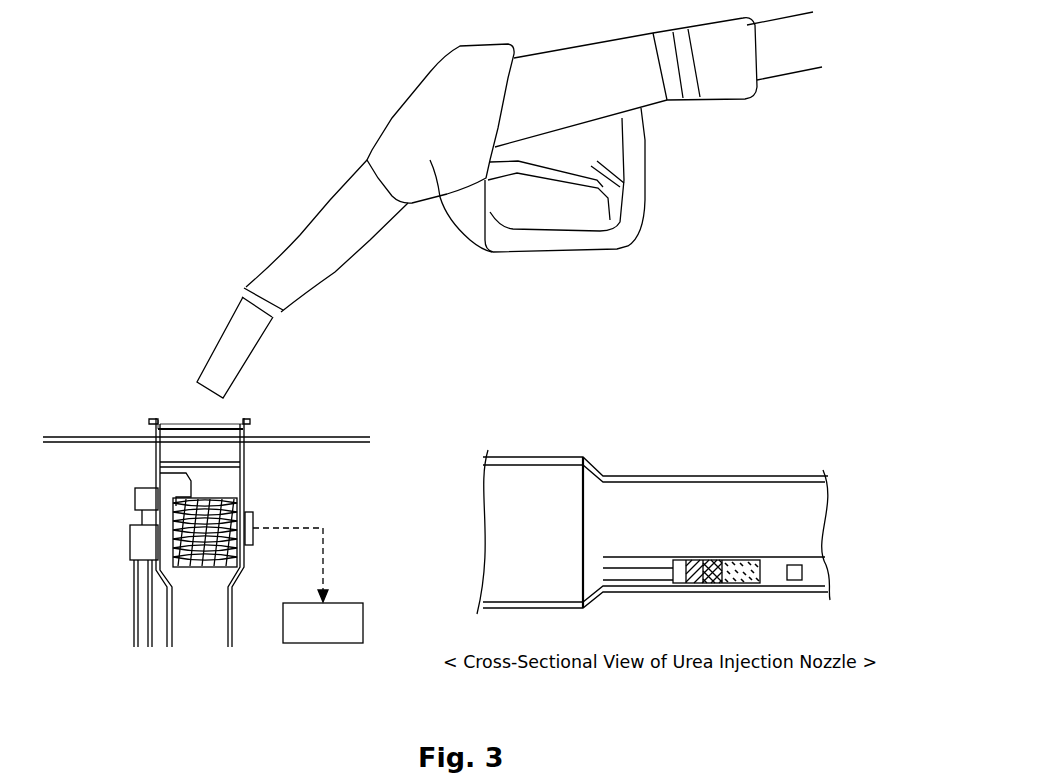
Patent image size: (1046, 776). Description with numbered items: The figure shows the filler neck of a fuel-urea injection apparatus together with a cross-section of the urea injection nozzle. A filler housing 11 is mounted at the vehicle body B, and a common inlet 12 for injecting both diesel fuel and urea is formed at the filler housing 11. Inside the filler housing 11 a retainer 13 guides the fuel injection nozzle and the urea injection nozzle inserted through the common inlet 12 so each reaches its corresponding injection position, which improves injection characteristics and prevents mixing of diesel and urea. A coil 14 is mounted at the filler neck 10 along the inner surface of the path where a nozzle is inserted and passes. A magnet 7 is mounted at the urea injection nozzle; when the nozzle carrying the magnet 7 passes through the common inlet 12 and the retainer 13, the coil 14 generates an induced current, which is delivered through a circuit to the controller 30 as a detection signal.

The magnet 7 is at (715, 560).
The filler neck 10 is at (253, 465).
The filler housing 11 is at (245, 498).
The common inlet 12 is at (157, 419).
The retainer 13 is at (177, 538).
The coil 14 is at (177, 513).
The controller (ECU) 30 is at (322, 645).
The vehicle body B is at (70, 440).